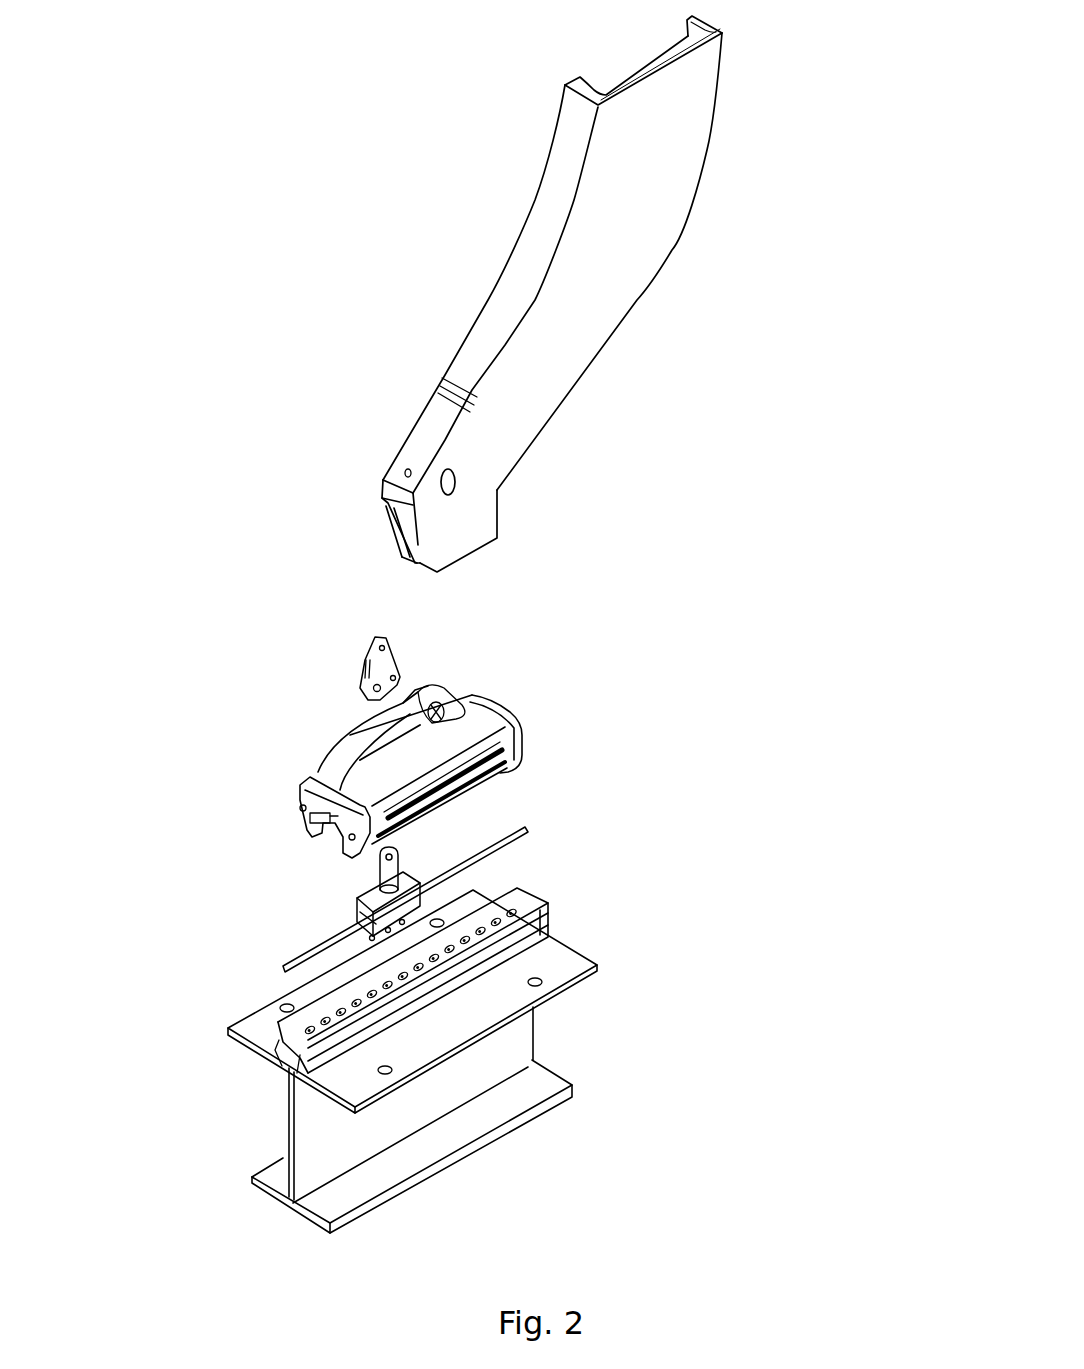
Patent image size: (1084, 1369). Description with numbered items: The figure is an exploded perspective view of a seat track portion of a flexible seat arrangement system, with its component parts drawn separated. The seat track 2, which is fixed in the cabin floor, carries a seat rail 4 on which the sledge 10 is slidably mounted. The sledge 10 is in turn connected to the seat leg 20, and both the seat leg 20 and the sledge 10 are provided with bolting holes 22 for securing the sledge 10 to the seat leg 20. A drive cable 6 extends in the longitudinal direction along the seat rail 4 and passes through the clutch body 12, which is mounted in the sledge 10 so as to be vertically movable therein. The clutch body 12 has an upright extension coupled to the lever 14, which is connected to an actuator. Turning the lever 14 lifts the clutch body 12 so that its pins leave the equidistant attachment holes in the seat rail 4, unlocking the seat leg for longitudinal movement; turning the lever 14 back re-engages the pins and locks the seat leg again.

The seat track 2 is at (555, 968).
The seat rail 4 is at (350, 1035).
The drive cable 6 is at (524, 834).
The sledge 10 is at (490, 745).
The clutch body 12 is at (363, 908).
The lever 14 is at (383, 668).
The seat leg 20 is at (623, 270).
The bolting holes 22 is at (462, 693).